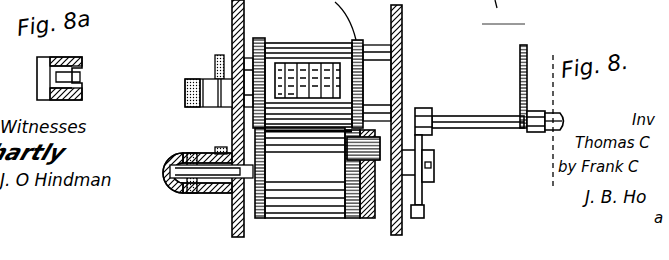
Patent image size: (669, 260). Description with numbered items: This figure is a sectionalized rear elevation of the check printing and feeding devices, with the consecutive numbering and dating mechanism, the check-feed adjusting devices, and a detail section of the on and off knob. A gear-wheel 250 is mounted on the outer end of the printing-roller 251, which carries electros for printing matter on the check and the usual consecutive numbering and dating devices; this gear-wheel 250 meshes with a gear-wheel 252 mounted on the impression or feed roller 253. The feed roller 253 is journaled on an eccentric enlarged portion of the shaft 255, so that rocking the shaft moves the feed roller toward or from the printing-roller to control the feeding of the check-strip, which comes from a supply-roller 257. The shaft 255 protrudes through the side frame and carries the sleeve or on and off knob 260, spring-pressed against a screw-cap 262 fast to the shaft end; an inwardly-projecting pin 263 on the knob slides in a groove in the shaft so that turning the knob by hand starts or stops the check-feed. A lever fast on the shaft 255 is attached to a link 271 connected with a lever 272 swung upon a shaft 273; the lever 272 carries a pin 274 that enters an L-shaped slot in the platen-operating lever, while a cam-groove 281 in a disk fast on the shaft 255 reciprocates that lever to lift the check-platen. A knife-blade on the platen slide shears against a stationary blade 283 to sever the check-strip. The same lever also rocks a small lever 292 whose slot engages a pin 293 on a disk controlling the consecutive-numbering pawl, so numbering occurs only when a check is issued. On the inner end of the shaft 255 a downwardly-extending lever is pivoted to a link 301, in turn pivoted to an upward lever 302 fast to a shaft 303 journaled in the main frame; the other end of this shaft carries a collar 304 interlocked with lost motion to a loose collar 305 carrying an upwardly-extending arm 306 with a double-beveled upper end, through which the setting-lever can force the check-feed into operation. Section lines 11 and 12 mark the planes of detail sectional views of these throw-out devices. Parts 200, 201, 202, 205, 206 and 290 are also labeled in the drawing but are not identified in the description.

In FIG. 8, the section line 11 is at (565, 50).
In FIG. 8, the section line 12 is at (388, 126).
In FIG. 8, the casing 200 is at (198, 152).
In FIG. 8, the cylinder cap 201 is at (163, 182).
In FIG. 8, the plunger rod 202 is at (168, 163).
In FIG. 8, the number wheel stem 205 is at (218, 150).
In FIG. 8, the collar 206 is at (175, 194).
In FIG. 8, the gear-wheel 250 is at (258, 40).
In FIG. 8, the printing-roller 251 is at (327, 42).
In FIG. 8, the gear-wheel 252 is at (479, 114).
In FIG. 8, the impression or feed roller 253 is at (333, 207).
In FIG. 8, the shaft 255 is at (434, 174).
In FIG. 8, the supply-roller 257 is at (257, 215).
In FIG. 8A, the on and off knob 260 is at (82, 60).
In FIG. 8, the screw-cap 262 is at (175, 228).
In FIG. 8A, the pin 263 is at (80, 78).
In FIG. 8, the link 271 is at (422, 191).
In FIG. 8, the lever 272 is at (434, 160).
In FIG. 8, the shaft 273 is at (347, 158).
In FIG. 8, the pin 274 is at (475, 214).
In FIG. 8, the cam-groove 281 is at (503, 18).
In FIG. 8, the stationary blade 283 is at (476, 6).
In FIG. 8, the lever 290 is at (434, 20).
In FIG. 8, the small lever 292 is at (380, 125).
In FIG. 8, the pin 293 is at (388, 100).
In FIG. 8, the link 301 is at (470, 238).
In FIG. 8, the lever 302 is at (424, 140).
In FIG. 8, the shaft 303 is at (470, 116).
In FIG. 8, the collar 304 is at (540, 133).
In FIG. 8, the collar 305 is at (527, 132).
In FIG. 8, the arm 306 is at (518, 67).